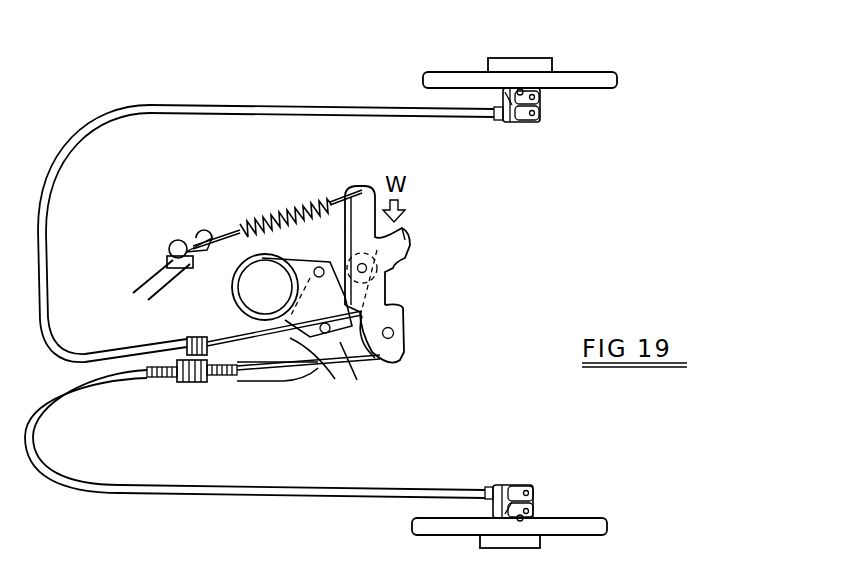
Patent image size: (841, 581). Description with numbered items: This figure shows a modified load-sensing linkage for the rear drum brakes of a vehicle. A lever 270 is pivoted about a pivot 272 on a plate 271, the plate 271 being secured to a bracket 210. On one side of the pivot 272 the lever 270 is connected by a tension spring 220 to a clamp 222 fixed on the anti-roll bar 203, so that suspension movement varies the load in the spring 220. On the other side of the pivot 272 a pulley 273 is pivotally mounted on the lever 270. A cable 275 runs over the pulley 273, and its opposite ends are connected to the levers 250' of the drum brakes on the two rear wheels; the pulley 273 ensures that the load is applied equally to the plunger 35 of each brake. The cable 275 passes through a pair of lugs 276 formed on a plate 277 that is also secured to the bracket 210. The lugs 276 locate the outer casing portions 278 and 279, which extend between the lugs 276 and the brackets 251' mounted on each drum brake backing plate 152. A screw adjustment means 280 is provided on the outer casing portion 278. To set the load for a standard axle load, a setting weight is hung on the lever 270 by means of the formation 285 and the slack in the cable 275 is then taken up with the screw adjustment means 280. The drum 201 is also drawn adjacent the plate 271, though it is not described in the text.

The drum brake backing plate 152 is at (620, 80).
The lever 250' is at (558, 303).
The bracket 251' is at (428, 275).
The plunger 35 is at (520, 90).
The outer casing portion 279 is at (205, 105).
The outer casing portion 278 is at (185, 494).
The lug 276 is at (190, 339).
The screw adjustment means 280 is at (152, 378).
The plate 277 is at (243, 380).
The cable 275 is at (290, 370).
The bracket 210 is at (335, 345).
The drum 201 is at (237, 311).
The plate 271 is at (340, 265).
The lever 270 is at (393, 266).
The formation 285 is at (406, 240).
The pivot 272 is at (368, 269).
The pulley 273 is at (413, 334).
The tension spring 220 is at (270, 212).
The clamp 222 is at (182, 238).
The anti-roll bar 203 is at (150, 282).